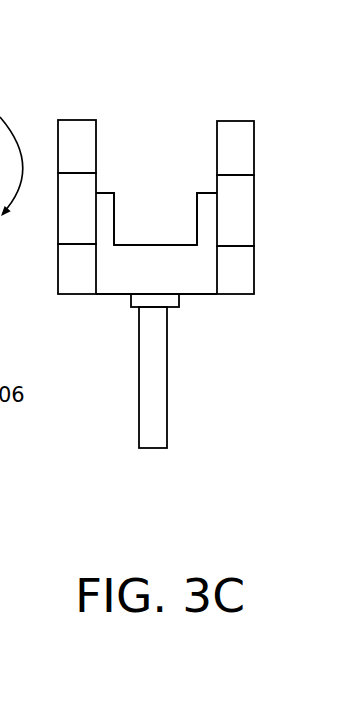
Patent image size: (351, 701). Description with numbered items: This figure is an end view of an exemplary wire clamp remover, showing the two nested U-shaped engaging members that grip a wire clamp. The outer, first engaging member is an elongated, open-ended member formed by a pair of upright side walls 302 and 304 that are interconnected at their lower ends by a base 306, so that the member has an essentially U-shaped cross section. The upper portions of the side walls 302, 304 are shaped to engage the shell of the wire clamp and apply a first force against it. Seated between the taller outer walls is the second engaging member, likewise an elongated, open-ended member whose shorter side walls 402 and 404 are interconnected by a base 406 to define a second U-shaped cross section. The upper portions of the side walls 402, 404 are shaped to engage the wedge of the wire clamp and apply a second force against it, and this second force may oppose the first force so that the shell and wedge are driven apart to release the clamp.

The side wall 302 is at (235, 128).
The side wall 304 is at (73, 128).
The base 306 is at (236, 275).
The side wall 402 is at (205, 190).
The side wall 404 is at (107, 190).
The base 406 is at (190, 277).